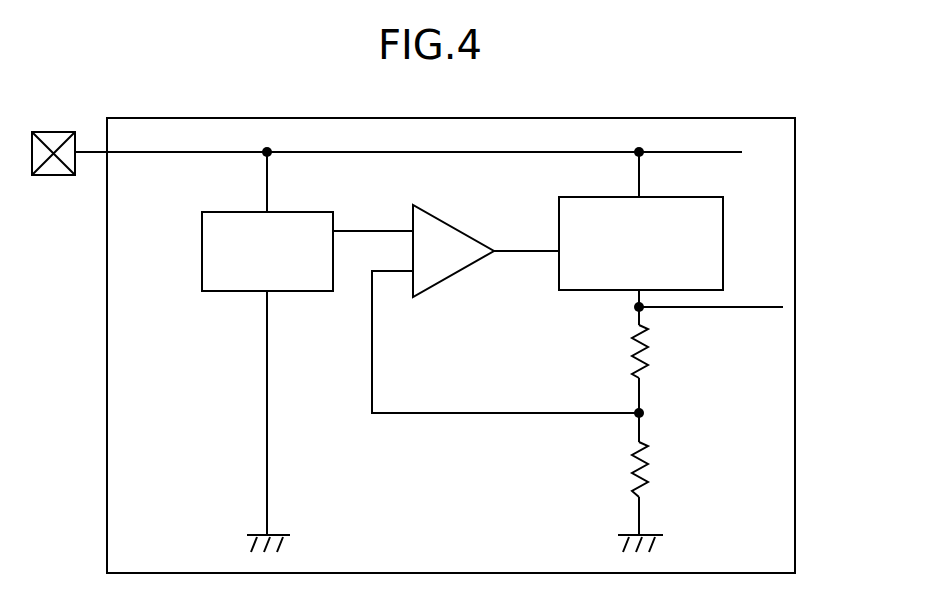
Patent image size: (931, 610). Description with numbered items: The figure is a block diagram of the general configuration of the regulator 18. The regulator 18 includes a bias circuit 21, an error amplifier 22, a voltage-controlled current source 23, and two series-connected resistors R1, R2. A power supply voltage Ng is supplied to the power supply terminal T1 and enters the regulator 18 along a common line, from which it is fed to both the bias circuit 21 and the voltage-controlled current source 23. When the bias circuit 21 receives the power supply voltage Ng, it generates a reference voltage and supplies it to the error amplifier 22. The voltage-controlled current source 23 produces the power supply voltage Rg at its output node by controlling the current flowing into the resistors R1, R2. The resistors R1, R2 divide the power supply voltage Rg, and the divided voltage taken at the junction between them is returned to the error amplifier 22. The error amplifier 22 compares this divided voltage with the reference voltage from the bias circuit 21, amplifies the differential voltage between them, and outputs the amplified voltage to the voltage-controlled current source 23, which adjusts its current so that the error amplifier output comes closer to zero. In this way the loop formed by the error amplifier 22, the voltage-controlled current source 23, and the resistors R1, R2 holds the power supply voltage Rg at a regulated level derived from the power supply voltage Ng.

The regulator 18 is at (795, 137).
The bias circuit 21 is at (202, 253).
The error amplifier 22 is at (476, 240).
The voltage-controlled current source 23 is at (559, 278).
The power supply terminal T1 is at (48, 178).
The power supply voltage Ng is at (172, 155).
The power supply voltage Rg is at (735, 305).
The resistor R1 is at (650, 357).
The resistor R2 is at (650, 476).